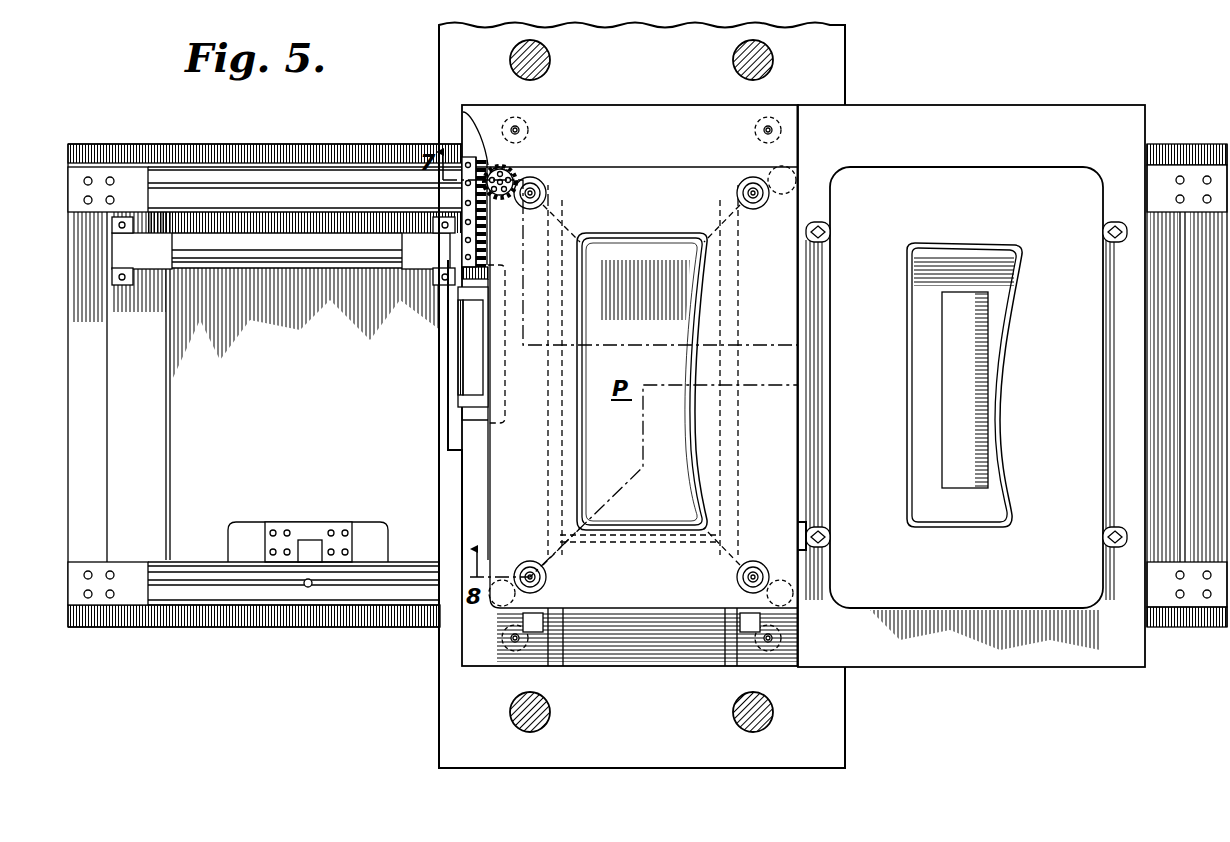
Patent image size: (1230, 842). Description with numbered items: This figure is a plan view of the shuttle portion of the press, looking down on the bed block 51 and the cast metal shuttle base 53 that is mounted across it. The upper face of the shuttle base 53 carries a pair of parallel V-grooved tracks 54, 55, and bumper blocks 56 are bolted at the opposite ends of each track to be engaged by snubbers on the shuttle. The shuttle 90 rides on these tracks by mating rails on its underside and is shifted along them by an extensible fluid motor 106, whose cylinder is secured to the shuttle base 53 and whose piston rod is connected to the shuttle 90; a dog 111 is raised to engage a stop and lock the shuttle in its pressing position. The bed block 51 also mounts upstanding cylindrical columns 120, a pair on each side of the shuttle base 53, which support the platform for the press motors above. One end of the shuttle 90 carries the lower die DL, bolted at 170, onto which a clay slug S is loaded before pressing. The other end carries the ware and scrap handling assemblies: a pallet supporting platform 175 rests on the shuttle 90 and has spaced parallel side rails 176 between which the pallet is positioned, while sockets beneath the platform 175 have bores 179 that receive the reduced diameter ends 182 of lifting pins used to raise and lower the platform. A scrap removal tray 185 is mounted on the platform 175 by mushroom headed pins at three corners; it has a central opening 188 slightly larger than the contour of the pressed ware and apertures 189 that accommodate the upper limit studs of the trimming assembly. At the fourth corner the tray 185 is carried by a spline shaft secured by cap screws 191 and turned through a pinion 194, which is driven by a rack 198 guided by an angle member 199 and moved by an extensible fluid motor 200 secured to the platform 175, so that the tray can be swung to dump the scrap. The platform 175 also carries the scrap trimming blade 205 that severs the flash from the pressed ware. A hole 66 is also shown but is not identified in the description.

The bed block 51 is at (848, 708).
The shuttle base 53 is at (222, 628).
The track 54 is at (272, 180).
The track 55 is at (190, 598).
The bumper blocks 56 is at (128, 172).
The hole 66 is at (308, 588).
The shuttle 90 is at (1050, 668).
The extensible fluid motor 106 is at (232, 268).
The dog 111 is at (315, 540).
The cylindrical columns 120 is at (552, 62).
The bolts 170 is at (1115, 245).
The pallet supporting platform 175 is at (800, 128).
The side rails 176 is at (565, 634).
The bore 179 is at (765, 132).
The reduced diameter ends 182 is at (520, 128).
The scrap removal tray 185 is at (808, 210).
The central opening 188 is at (700, 452).
The apertures 189 is at (745, 206).
The cap screws 191 is at (515, 180).
The pinion 194 is at (510, 170).
The rack 198 is at (465, 160).
The angle member 199 is at (466, 168).
The extensible fluid motor 200 is at (463, 345).
The scrap trimming blade 205 is at (583, 310).
The clay slug S is at (950, 450).
The lower die DL is at (920, 598).